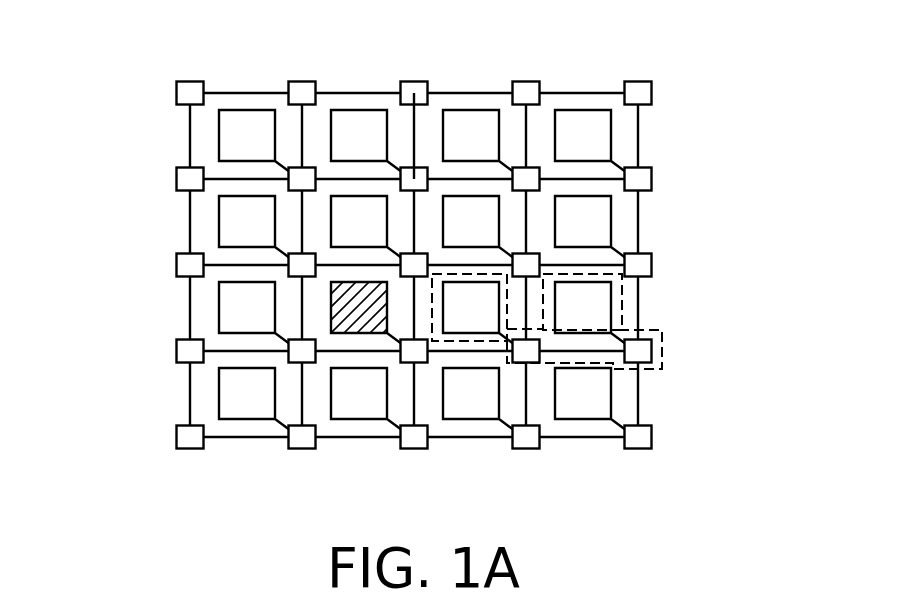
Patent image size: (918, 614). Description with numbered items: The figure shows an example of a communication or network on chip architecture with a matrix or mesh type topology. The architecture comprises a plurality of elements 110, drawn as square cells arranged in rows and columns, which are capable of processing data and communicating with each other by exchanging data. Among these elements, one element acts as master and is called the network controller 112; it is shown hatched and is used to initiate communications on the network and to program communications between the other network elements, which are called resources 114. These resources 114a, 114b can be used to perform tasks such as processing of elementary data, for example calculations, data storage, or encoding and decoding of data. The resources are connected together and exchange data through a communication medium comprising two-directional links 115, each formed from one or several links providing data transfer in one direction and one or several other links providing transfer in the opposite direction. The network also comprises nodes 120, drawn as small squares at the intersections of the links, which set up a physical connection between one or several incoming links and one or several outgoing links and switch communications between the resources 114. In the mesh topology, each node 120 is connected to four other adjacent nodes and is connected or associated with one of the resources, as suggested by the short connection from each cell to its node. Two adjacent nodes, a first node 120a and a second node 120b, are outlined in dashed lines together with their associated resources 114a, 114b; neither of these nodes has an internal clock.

The elements 110 is at (353, 128).
The network controller 112 is at (364, 320).
The resources 114 is at (236, 228).
The resource 114a is at (469, 320).
The resource 114b is at (597, 303).
The two-directional links 115 is at (417, 125).
The nodes 120 is at (289, 181).
The first node 120a is at (528, 350).
The second node 120b is at (638, 349).